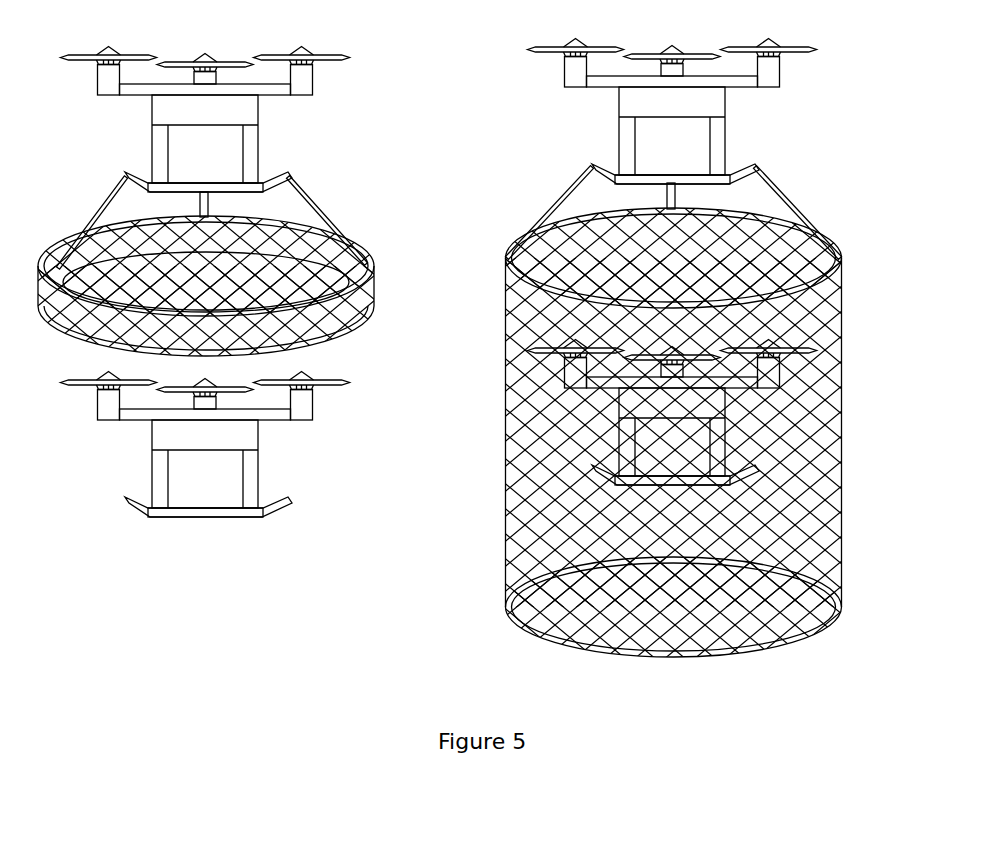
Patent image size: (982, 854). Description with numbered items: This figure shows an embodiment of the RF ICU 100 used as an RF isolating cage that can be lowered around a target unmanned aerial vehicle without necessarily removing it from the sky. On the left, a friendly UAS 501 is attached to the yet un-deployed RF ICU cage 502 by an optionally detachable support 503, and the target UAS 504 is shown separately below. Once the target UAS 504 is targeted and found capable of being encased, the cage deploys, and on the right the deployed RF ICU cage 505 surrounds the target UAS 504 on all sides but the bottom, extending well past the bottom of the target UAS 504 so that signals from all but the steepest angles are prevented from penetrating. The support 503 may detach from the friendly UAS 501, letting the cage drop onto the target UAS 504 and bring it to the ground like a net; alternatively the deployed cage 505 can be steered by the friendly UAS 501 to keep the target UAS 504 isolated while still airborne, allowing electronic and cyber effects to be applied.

The RF ICU 100 is at (75, 215).
The friendly UAS 501 is at (221, 132).
The un-deployed RF ICU cage 502 is at (265, 286).
The support 503 is at (254, 223).
The target UAS 504 is at (221, 445).
The deployed RF ICU cage 505 is at (735, 432).